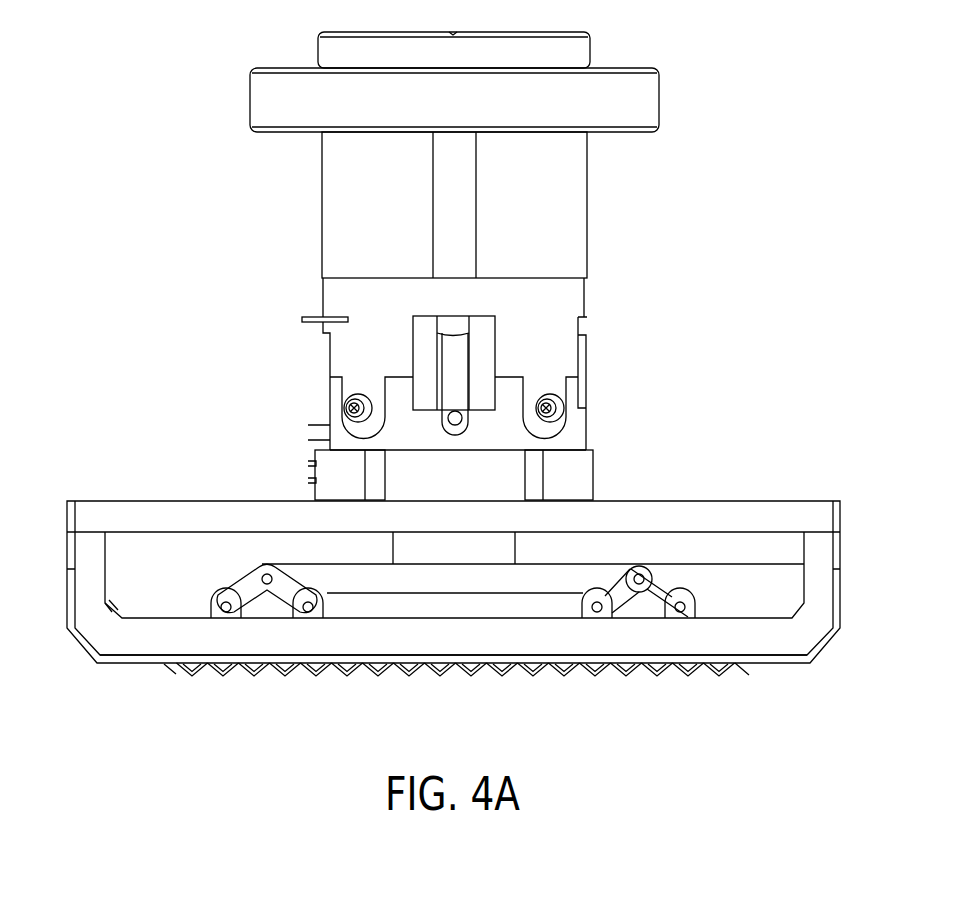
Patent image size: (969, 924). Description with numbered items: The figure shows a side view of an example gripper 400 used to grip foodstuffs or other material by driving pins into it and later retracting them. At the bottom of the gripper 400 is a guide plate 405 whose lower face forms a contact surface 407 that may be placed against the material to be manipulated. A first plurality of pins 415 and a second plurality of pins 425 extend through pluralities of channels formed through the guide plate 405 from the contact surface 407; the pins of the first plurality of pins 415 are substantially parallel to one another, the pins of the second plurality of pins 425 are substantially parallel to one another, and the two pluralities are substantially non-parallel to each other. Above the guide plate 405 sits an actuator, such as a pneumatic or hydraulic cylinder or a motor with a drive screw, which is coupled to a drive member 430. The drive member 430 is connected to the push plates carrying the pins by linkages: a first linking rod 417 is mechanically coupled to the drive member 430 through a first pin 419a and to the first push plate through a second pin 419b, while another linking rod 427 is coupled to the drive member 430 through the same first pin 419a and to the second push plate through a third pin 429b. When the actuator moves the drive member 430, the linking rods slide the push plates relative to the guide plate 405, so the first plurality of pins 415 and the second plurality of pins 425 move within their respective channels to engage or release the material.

The gripper 400 is at (735, 297).
The guide plate 405 is at (105, 637).
The contact surface 407 is at (138, 665).
The first plurality of pins 415 is at (270, 677).
The first linking rod 417 is at (664, 590).
The first pin 419a is at (641, 567).
The second pin 419b is at (682, 600).
The second plurality of pins 425 is at (633, 672).
The first linking rod 427 is at (623, 600).
The third pin 429b is at (597, 607).
The drive member 430 is at (383, 580).